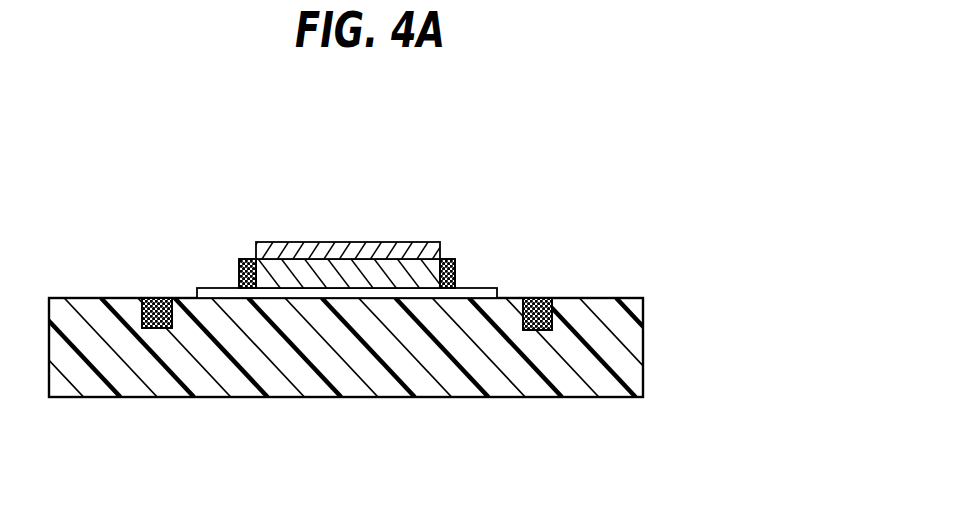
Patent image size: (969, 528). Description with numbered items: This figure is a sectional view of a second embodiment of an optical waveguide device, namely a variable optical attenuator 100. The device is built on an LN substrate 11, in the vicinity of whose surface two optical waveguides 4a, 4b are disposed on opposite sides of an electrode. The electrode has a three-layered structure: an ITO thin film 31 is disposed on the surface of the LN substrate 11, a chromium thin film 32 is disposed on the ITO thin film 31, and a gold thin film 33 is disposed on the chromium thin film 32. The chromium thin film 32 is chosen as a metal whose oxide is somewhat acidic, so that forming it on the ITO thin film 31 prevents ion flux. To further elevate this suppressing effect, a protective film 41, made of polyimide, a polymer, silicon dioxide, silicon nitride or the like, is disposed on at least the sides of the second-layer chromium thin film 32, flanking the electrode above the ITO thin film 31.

The variable optical attenuator 100 is at (119, 292).
The LN substrate 11 is at (453, 387).
The optical waveguide 4a is at (158, 328).
The optical waveguide 4b is at (540, 332).
The ITO thin film 31 is at (498, 297).
The chromium thin film 32 is at (417, 280).
The gold thin film 33 is at (395, 252).
The protective film 41 is at (254, 259).